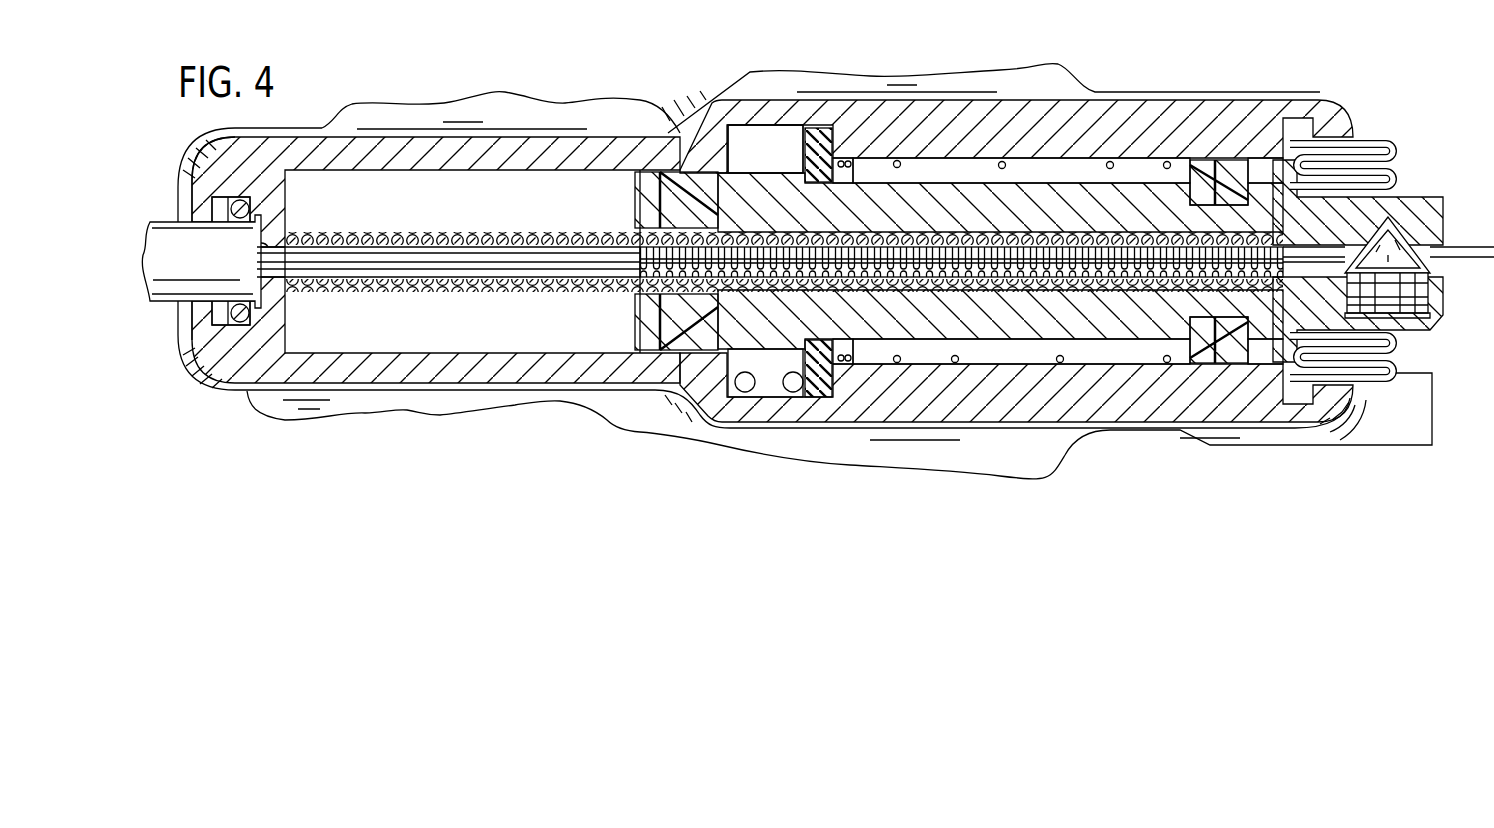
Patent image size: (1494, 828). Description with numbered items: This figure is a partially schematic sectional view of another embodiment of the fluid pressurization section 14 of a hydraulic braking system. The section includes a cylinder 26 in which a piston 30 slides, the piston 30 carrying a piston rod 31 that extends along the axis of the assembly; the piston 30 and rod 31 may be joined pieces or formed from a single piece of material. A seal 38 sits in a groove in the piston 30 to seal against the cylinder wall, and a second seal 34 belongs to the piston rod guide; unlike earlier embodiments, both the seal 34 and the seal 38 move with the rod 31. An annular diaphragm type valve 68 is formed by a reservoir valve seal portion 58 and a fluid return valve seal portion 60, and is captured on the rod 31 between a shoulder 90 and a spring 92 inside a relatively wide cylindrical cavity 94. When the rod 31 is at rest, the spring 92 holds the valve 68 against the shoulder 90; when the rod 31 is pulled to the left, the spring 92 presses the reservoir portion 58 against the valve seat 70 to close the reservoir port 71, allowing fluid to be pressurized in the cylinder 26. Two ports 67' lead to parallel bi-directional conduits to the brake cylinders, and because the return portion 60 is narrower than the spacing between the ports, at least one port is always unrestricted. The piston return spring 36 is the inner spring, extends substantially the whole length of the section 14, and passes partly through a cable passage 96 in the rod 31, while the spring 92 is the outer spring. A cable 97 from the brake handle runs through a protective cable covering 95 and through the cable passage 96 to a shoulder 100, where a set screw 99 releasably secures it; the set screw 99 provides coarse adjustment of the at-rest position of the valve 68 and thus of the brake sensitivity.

The fluid pressurization section 14 is at (1222, 78).
The cylinder 26 is at (1018, 362).
The piston 30 is at (1255, 376).
The piston rod 31 is at (1055, 182).
The seal 34 is at (672, 355).
The piston return spring 36 is at (470, 232).
The seal 38 is at (1205, 366).
The reservoir valve seal portion 58 is at (818, 122).
The fluid return valve seal portion 60 is at (824, 403).
The port 67' is at (734, 428).
The diaphragm type valve 68 is at (795, 145).
The valve seat 70 is at (741, 126).
The reservoir port 71 is at (738, 148).
The shoulder 90 is at (846, 156).
The spring 92 is at (887, 178).
The cylindrical cavity 94 is at (771, 404).
The protective cable covering 95 is at (160, 224).
The cable passage 96 is at (1140, 300).
The cable 97 is at (1452, 248).
The set screw 99 is at (1431, 282).
The shoulder 100 is at (1412, 197).